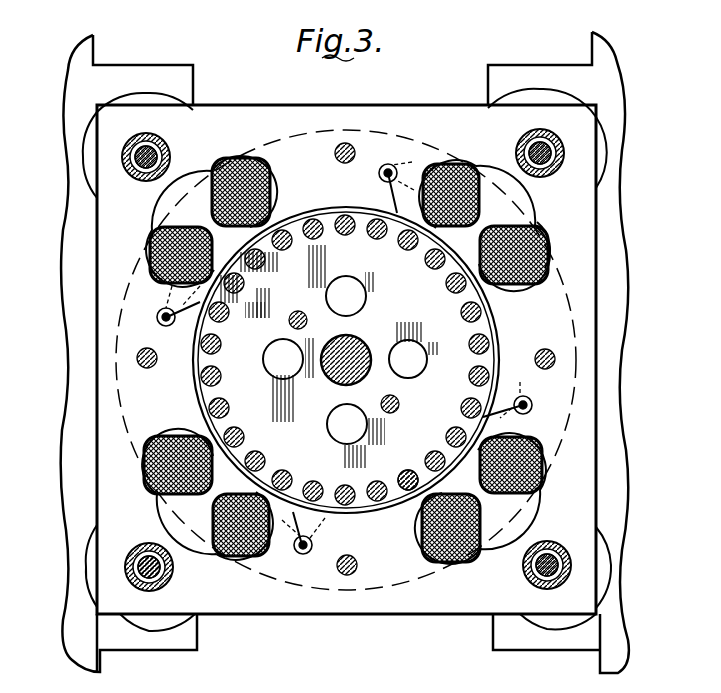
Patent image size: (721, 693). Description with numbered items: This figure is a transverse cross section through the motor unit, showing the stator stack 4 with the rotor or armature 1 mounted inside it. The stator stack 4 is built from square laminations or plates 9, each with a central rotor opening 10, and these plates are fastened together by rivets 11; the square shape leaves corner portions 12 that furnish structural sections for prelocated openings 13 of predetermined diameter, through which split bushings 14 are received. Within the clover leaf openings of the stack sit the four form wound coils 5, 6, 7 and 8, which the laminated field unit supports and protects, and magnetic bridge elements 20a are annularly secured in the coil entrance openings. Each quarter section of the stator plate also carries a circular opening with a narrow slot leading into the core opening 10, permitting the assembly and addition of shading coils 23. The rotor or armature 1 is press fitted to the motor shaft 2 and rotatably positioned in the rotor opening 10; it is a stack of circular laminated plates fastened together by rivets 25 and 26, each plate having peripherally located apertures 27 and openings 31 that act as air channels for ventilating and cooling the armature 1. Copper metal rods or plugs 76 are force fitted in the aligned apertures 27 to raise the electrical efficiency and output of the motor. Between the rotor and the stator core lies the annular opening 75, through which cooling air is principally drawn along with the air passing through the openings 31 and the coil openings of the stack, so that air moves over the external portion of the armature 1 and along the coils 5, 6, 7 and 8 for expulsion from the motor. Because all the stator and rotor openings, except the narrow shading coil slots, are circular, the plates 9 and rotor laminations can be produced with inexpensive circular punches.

The squirrel cage rotor or armature 1 is at (462, 328).
The motor shaft 2 is at (362, 342).
The stator stack 4 is at (401, 100).
The form wound coil 5 is at (450, 153).
The form wound coil 6 is at (538, 252).
The form wound coil 7 is at (422, 562).
The form wound coil 8 is at (150, 468).
The stator plate 9 is at (585, 278).
The central rotor opening 10 is at (197, 377).
The rivet 11 is at (338, 147).
The corner portion 12 is at (105, 131).
The prelocated opening 13 is at (168, 148).
The split bushing 14 is at (131, 170).
The magnetic bridge element 20a is at (281, 242).
The shading coil 23 is at (386, 168).
The rivet 25 is at (298, 310).
The rivet 26 is at (400, 405).
The peripherally located aperture 27 is at (230, 406).
The opening 31 is at (365, 292).
The annular opening 75 is at (314, 216).
The metal rod or plug 76 is at (452, 281).